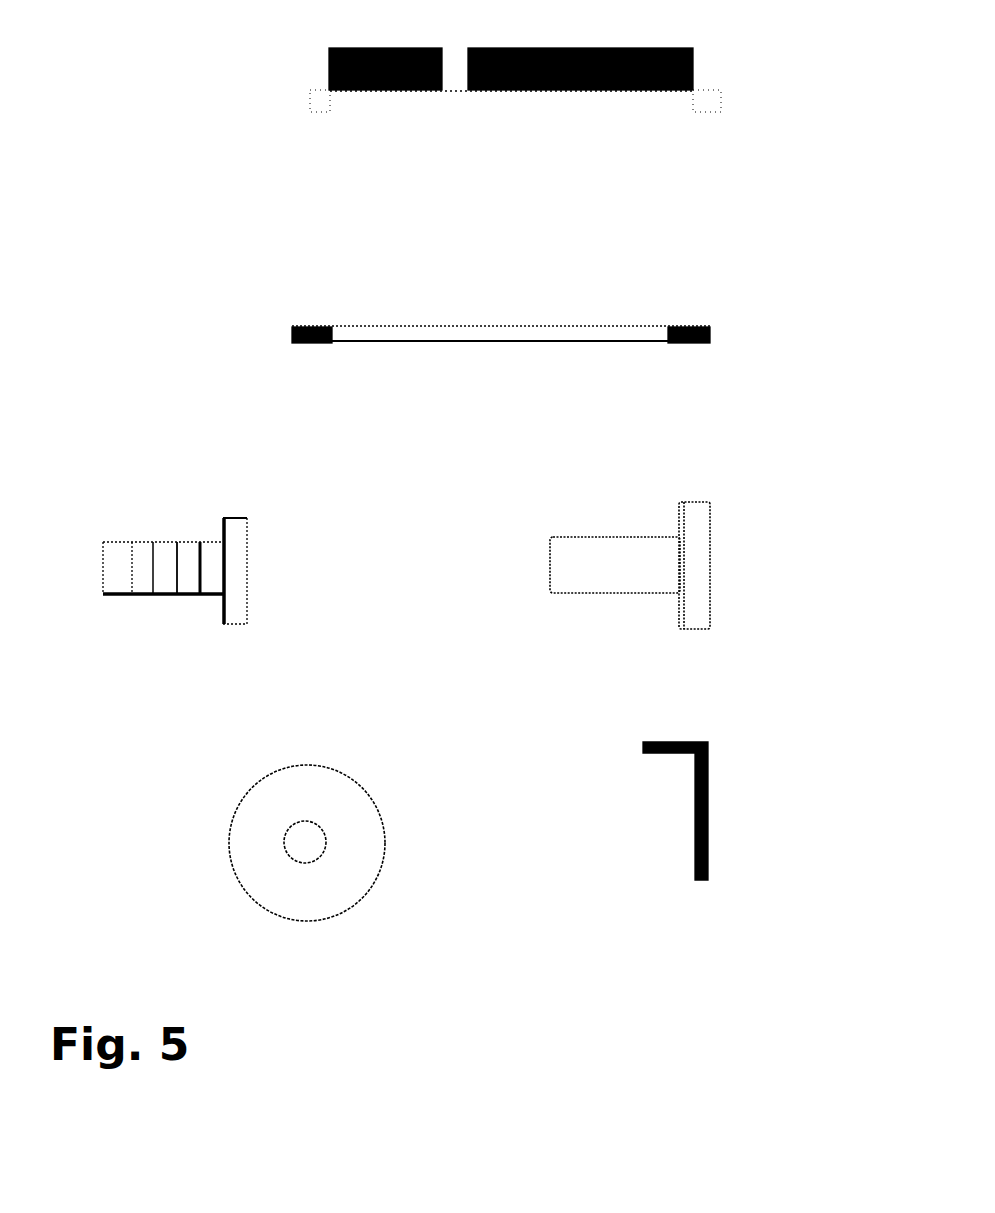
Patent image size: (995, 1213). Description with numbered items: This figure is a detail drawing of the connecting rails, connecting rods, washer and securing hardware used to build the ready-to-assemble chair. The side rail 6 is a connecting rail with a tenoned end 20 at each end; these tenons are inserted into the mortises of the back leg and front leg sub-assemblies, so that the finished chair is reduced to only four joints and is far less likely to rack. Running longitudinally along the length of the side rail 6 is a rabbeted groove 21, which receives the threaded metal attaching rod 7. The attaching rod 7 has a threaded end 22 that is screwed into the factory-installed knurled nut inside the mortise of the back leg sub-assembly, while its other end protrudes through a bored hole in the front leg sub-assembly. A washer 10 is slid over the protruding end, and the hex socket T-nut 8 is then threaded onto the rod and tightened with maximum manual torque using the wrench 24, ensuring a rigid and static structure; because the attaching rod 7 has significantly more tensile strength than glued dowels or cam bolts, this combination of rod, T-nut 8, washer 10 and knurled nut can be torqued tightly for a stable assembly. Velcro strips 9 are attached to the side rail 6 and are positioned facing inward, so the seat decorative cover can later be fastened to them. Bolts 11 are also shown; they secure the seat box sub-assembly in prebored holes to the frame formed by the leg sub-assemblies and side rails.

The side rail 6 is at (420, 113).
The attaching rod 7 is at (465, 328).
The hex socket T-nut 8 is at (517, 597).
The Velcro strips 9 is at (578, 48).
The washer 10 is at (248, 836).
The bolts 11 is at (282, 559).
The tenoned end 20 is at (312, 112).
The rabbeted groove 21 is at (560, 98).
The threaded end 22 is at (290, 343).
The wrench 24 is at (665, 807).